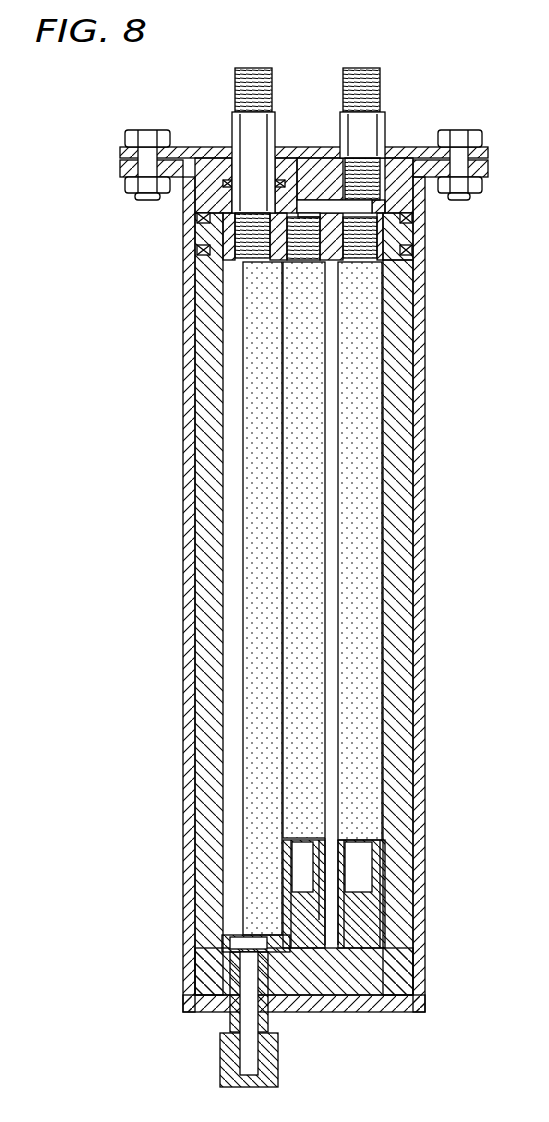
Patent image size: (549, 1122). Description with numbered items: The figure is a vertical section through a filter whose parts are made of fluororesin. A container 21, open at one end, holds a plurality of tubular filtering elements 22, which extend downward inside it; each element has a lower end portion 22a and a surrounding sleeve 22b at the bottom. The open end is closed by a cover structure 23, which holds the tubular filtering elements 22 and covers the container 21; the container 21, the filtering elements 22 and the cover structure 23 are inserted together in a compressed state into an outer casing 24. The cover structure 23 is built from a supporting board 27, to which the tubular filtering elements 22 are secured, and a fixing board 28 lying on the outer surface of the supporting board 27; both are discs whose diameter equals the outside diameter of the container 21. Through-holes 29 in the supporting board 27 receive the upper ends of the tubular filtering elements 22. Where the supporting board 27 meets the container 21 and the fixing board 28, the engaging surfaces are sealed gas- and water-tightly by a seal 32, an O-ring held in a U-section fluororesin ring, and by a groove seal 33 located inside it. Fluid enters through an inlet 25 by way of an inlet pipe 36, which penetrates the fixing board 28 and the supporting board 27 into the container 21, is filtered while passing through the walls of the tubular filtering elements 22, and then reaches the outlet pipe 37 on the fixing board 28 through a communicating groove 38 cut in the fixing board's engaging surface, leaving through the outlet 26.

The container 21 is at (196, 538).
The tubular filtering elements 22 is at (315, 633).
The electrode end sections 22a is at (317, 877).
The sleeves 22b is at (385, 883).
The cover structure 23 is at (207, 170).
The outer casing 24 is at (424, 468).
The inlet 25 is at (247, 66).
The outlet 26 is at (363, 67).
The supporting board 27 is at (397, 240).
The fixing board 28 is at (400, 172).
The through-holes 29 is at (378, 232).
The seal 32 is at (190, 250).
The groove seal 33 is at (198, 278).
The inlet pipe 36 is at (243, 130).
The outlet pipe 37 is at (347, 130).
The communicating groove 38 is at (310, 205).